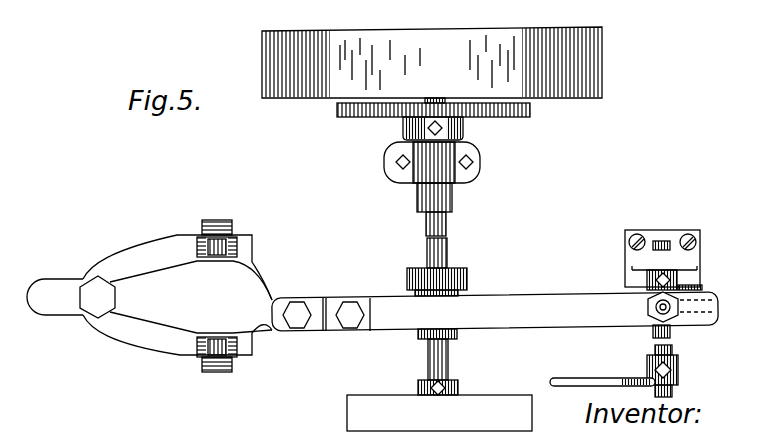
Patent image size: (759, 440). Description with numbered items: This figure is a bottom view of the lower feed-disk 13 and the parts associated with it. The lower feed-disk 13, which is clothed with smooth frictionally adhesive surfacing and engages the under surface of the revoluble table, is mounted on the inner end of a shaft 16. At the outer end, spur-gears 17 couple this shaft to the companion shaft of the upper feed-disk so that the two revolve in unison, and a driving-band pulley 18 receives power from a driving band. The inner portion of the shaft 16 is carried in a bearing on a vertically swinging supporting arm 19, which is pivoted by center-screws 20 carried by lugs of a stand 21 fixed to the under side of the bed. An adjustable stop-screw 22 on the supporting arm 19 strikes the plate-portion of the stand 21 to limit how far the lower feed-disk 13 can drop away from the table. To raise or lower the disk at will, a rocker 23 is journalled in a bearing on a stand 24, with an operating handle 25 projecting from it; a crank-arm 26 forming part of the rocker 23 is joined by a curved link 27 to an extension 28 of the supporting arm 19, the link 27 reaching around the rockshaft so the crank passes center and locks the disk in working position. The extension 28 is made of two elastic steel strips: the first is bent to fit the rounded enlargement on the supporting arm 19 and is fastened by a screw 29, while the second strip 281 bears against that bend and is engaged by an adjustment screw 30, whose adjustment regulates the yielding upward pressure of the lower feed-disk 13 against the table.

The lower feed-disk 13 is at (356, 395).
The shaft 16 is at (447, 250).
The spur-gears 17 is at (337, 113).
The driving-band pulley 18 is at (578, 98).
The supporting arm 19 is at (262, 323).
The center-screws 20 is at (220, 220).
The stand 21 is at (252, 263).
The adjustable stop-screw 22 is at (115, 297).
The rocker 23 is at (653, 336).
The stand 24 is at (625, 250).
The operating handle 25 is at (560, 378).
The crank-arm 26 is at (697, 288).
The link 27 is at (718, 306).
The extension 28 is at (547, 293).
The second strip 281 is at (515, 280).
The screw 29 is at (297, 310).
The adjustment screw 30 is at (350, 310).